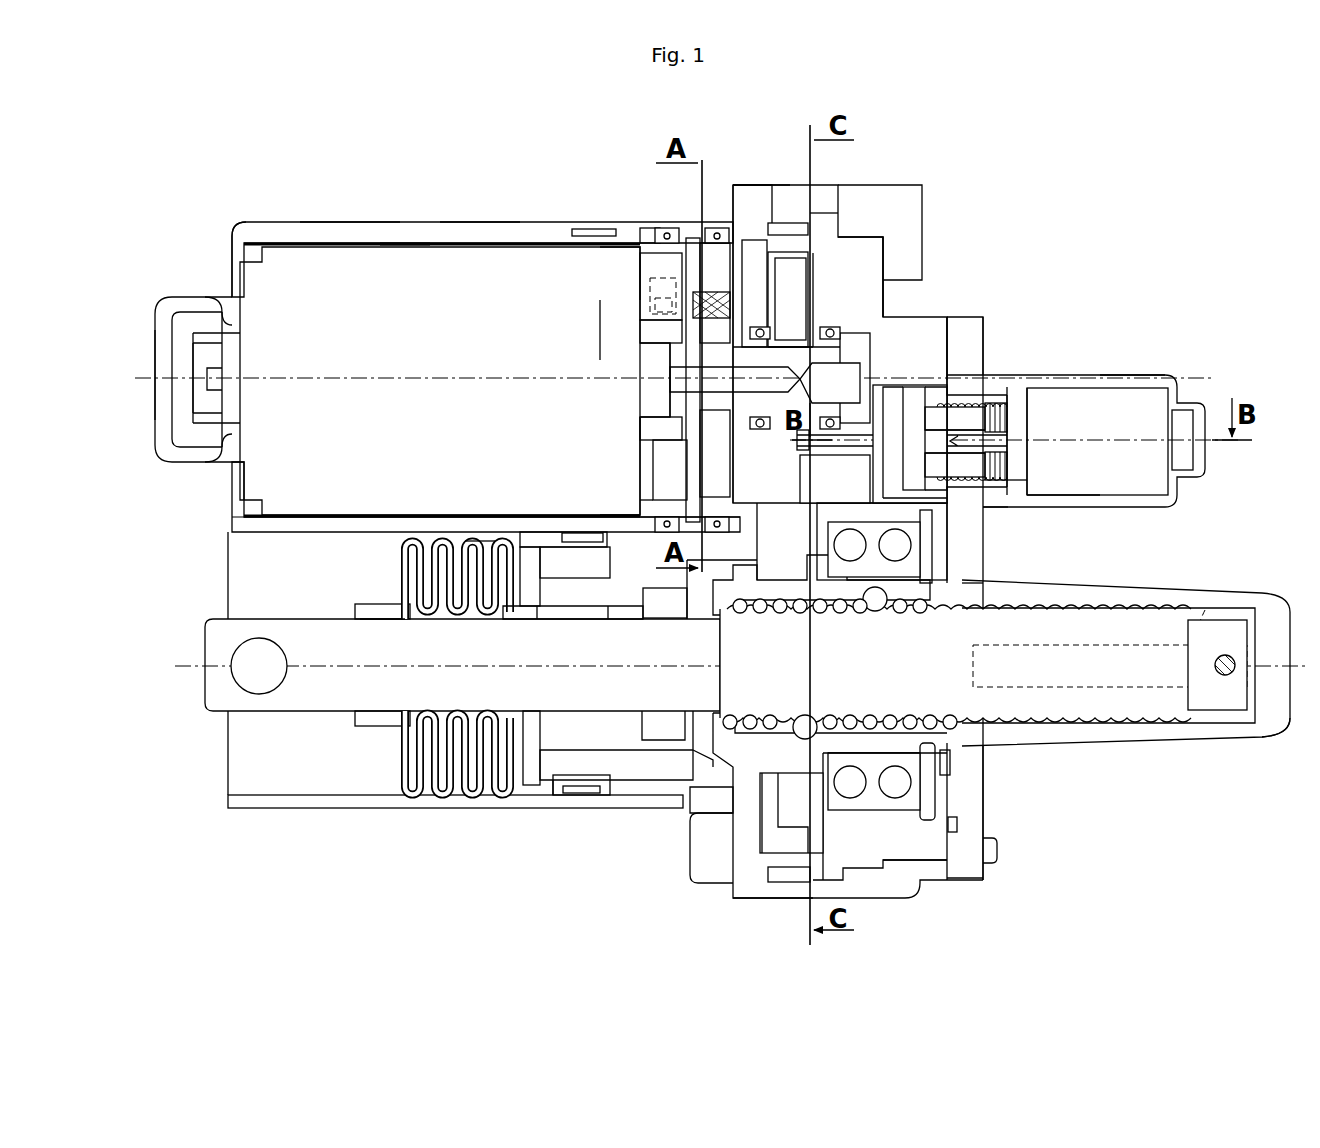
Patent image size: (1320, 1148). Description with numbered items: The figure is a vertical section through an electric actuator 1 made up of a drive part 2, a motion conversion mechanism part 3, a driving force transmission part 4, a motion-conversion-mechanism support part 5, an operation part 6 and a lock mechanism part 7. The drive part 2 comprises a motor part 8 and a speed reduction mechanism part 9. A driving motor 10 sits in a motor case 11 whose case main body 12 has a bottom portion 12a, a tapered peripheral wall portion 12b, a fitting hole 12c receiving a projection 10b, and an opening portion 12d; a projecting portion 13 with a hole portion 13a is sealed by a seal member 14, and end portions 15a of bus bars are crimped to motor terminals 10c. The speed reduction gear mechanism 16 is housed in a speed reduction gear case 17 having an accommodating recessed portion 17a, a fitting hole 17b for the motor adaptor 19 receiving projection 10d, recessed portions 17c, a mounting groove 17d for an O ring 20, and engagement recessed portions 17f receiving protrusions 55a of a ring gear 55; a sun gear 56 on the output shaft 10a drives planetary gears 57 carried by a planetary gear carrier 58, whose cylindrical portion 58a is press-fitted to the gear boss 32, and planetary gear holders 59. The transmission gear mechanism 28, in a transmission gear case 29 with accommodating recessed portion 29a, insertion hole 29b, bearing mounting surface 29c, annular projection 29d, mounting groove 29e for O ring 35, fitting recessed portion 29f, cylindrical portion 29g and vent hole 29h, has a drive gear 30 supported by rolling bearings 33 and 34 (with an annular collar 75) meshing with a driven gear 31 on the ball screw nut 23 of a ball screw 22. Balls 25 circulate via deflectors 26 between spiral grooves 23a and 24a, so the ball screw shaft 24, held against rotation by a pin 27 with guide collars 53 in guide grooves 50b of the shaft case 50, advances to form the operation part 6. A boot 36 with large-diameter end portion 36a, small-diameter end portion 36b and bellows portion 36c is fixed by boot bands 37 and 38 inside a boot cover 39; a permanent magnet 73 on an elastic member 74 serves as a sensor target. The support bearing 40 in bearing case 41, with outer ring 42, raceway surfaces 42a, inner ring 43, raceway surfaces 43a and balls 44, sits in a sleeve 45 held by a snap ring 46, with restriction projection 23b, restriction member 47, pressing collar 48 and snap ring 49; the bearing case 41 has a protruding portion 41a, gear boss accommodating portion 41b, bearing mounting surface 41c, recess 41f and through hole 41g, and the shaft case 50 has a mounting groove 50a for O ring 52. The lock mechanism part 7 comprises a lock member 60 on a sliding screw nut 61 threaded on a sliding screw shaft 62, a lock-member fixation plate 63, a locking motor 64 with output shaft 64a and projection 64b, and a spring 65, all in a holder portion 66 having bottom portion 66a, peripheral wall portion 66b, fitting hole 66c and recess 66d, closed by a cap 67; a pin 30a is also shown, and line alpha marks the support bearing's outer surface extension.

The electric actuator 1 is at (524, 176).
The drive part 2 is at (345, 210).
The motion conversion mechanism part 3 is at (655, 780).
The driving force transmission part 4 is at (741, 140).
The motion-conversion-mechanism support part 5 is at (962, 890).
The operation part 6 is at (205, 680).
The lock mechanism part 7 is at (985, 330).
The motor part 8 is at (404, 218).
The speed reduction mechanism part 9 is at (578, 222).
The driving motor 10 is at (440, 270).
The output shaft 10a is at (640, 385).
The projection 10b is at (165, 442).
The motor terminal 10c is at (640, 296).
The projection 10d is at (655, 410).
The motor case 11 is at (366, 222).
The case main body 12 is at (283, 230).
The bottom portion 12a is at (233, 257).
The peripheral wall portion 12b is at (478, 225).
The fitting hole 12c is at (198, 399).
The opening portion 12d is at (652, 224).
The projecting portion 13 is at (180, 318).
The hole portion 13a is at (170, 338).
The seal member 14 is at (210, 410).
The end portion 15a is at (648, 270).
The speed reduction gear mechanism 16 is at (600, 250).
The speed reduction gear case 17 is at (697, 230).
The accommodating recessed portion 17a is at (660, 450).
The fitting hole 17b is at (650, 432).
The recessed portion 17c is at (648, 292).
The mounting groove 17d is at (635, 540).
The engagement recessed portion 17f is at (633, 240).
The motor adaptor 19 is at (622, 335).
The O ring 20 is at (640, 485).
The ball screw 22 is at (700, 830).
The ball screw nut 23 is at (700, 700).
The spiral groove 23a is at (880, 612).
The restriction projection 23b is at (722, 830).
The ball screw shaft 24 is at (535, 795).
The spiral groove 24a is at (775, 607).
The ball 25 is at (815, 610).
The deflector 26 is at (770, 705).
The pin 27 is at (1222, 676).
The transmission gear mechanism 28 is at (830, 240).
The transmission gear case 29 is at (735, 245).
The accommodating recessed portion 29a is at (782, 265).
The insertion hole 29b is at (660, 358).
The bearing mounting surface 29c is at (764, 232).
The annular projection 29d is at (735, 600).
The mounting groove 29e is at (727, 705).
The fitting recessed portion 29f is at (760, 860).
The cylindrical portion 29g is at (595, 800).
The vent hole 29h is at (640, 730).
The drive gear 30 is at (844, 263).
The pin 30a is at (825, 450).
The driven gear 31 is at (730, 860).
The gear boss 32 is at (875, 262).
The rolling bearing 33 is at (760, 330).
The rolling bearing 34 is at (825, 325).
The O ring 35 is at (697, 600).
The boot 36 is at (442, 790).
The large-diameter end portion 36a is at (560, 800).
The small-diameter end portion 36b is at (370, 727).
The bellows portion 36c is at (478, 792).
The boot band 37 is at (576, 815).
The boot band 38 is at (385, 727).
The boot cover 39 is at (255, 808).
The support bearing 40 is at (875, 880).
The bearing case 41 is at (860, 890).
The protruding portion 41a is at (790, 890).
The gear boss accommodating portion 41b is at (928, 330).
The bearing mounting surface 41c is at (848, 305).
The lock-mechanism accommodating recessed portion 41f is at (985, 570).
The through hole 41g is at (905, 400).
The outer ring 42 is at (880, 735).
The raceway surface 42a is at (930, 830).
The inner ring 43 is at (850, 715).
The raceway surface 43a is at (920, 730).
The ball 44 is at (905, 880).
The sleeve 45 is at (790, 712).
The snap ring 46 is at (985, 870).
The restriction member 47 is at (985, 795).
The pressing collar 48 is at (985, 815).
The snap ring 49 is at (985, 767).
The shaft case 50 is at (1175, 745).
The mounting groove 50a is at (995, 845).
The guide groove 50b is at (1205, 610).
The O ring 52 is at (990, 835).
The guide collar 53 is at (1260, 740).
The ring gear 55 is at (715, 240).
The protrusion 55a is at (688, 244).
The sun gear 56 is at (713, 422).
The planetary gear 57 is at (648, 325).
The planetary gear carrier 58 is at (736, 265).
The cylindrical portion 58a is at (790, 330).
The planetary gear holder 59 is at (748, 262).
The lock member 60 is at (880, 310).
The sliding screw nut 61 is at (990, 400).
The sliding screw shaft 62 is at (1000, 395).
The lock-member fixation plate 63 is at (955, 325).
The locking motor 64 is at (1130, 395).
The output shaft 64a is at (1040, 510).
The projection 64b is at (1045, 435).
The spring 65 is at (965, 400).
The holder portion 66 is at (1075, 380).
The bottom portion 66a is at (1035, 470).
The peripheral wall portion 66b is at (1105, 385).
The fitting hole 66c is at (1035, 420).
The lock-mechanism accommodating recessed portion 66d is at (1000, 495).
The cap 67 is at (1185, 405).
The permanent magnet 73 is at (580, 602).
The cylindrical elastic member 74 is at (540, 612).
The annular collar 75 is at (690, 378).
The long dashed short dashed line alpha is at (230, 519).